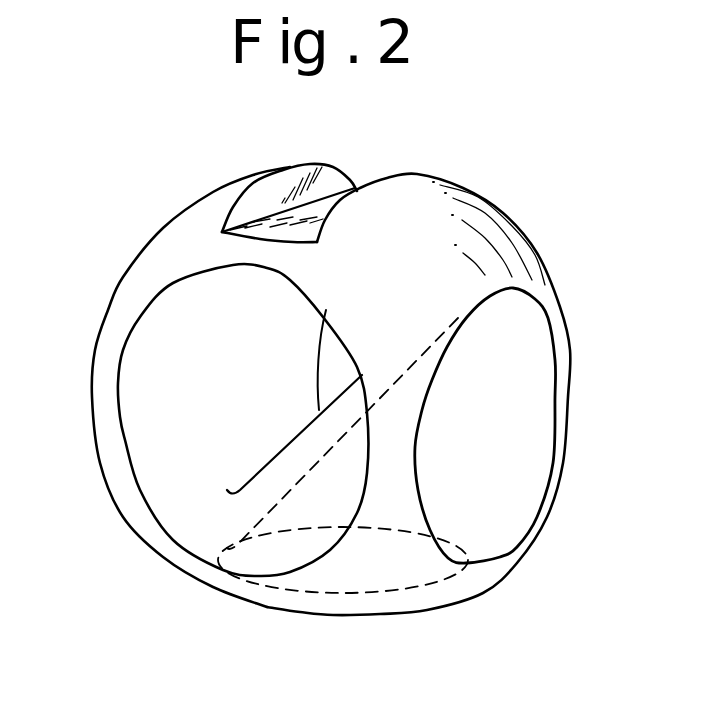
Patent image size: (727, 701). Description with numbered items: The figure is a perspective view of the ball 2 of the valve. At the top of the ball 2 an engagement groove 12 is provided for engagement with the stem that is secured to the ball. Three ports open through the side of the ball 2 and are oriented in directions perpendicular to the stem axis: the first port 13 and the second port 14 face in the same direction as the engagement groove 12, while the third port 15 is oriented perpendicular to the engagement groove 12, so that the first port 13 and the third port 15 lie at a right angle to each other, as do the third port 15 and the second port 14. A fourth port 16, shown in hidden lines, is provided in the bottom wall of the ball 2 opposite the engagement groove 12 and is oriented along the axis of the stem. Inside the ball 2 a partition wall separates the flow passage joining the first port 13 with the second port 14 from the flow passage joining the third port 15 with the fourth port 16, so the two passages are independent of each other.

The ball 2 is at (184, 253).
The engagement groove 12 is at (352, 190).
The first port 13 is at (200, 465).
The second port 14 is at (342, 368).
The third port 15 is at (497, 442).
The fourth port 16 is at (360, 576).